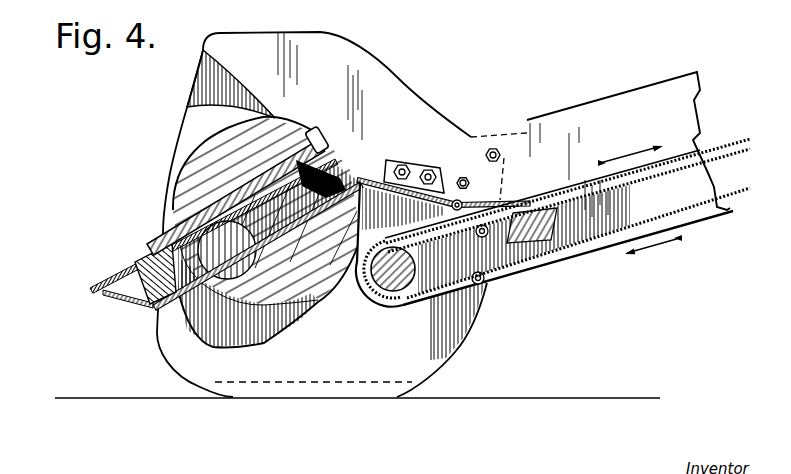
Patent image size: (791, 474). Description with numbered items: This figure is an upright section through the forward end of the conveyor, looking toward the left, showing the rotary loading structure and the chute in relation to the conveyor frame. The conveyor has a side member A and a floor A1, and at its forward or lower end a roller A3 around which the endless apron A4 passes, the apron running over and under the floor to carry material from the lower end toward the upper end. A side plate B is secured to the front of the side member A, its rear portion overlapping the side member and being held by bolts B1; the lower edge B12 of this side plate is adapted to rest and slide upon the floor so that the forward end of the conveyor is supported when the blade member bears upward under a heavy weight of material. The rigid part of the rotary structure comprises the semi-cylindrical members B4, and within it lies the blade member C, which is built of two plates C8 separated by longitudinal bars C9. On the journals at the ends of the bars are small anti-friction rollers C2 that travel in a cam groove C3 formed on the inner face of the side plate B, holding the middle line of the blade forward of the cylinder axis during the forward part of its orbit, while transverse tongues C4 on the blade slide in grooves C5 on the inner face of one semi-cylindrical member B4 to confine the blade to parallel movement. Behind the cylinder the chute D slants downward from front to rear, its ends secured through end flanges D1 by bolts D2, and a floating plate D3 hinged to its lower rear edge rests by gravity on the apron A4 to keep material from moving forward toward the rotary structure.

The side member A is at (644, 100).
The floor A1 is at (757, 146).
The roller A3 is at (460, 298).
The endless apron A4 is at (747, 200).
The side plate B is at (364, 77).
The bolts B1 is at (512, 168).
The lower edge B12 is at (347, 392).
The semi-cylindrical member B4 is at (200, 170).
The blade member C is at (226, 234).
The anti-friction roller C2 is at (140, 297).
The cam groove C3 is at (190, 94).
The transverse tongues C4 is at (148, 240).
The grooves C5 is at (327, 138).
The plates C8 is at (110, 300).
The longitudinal bars C9 is at (120, 303).
The chute D is at (368, 186).
The end flanges D1 is at (403, 163).
The bolts D2 is at (432, 168).
The floating plate D3 is at (508, 193).